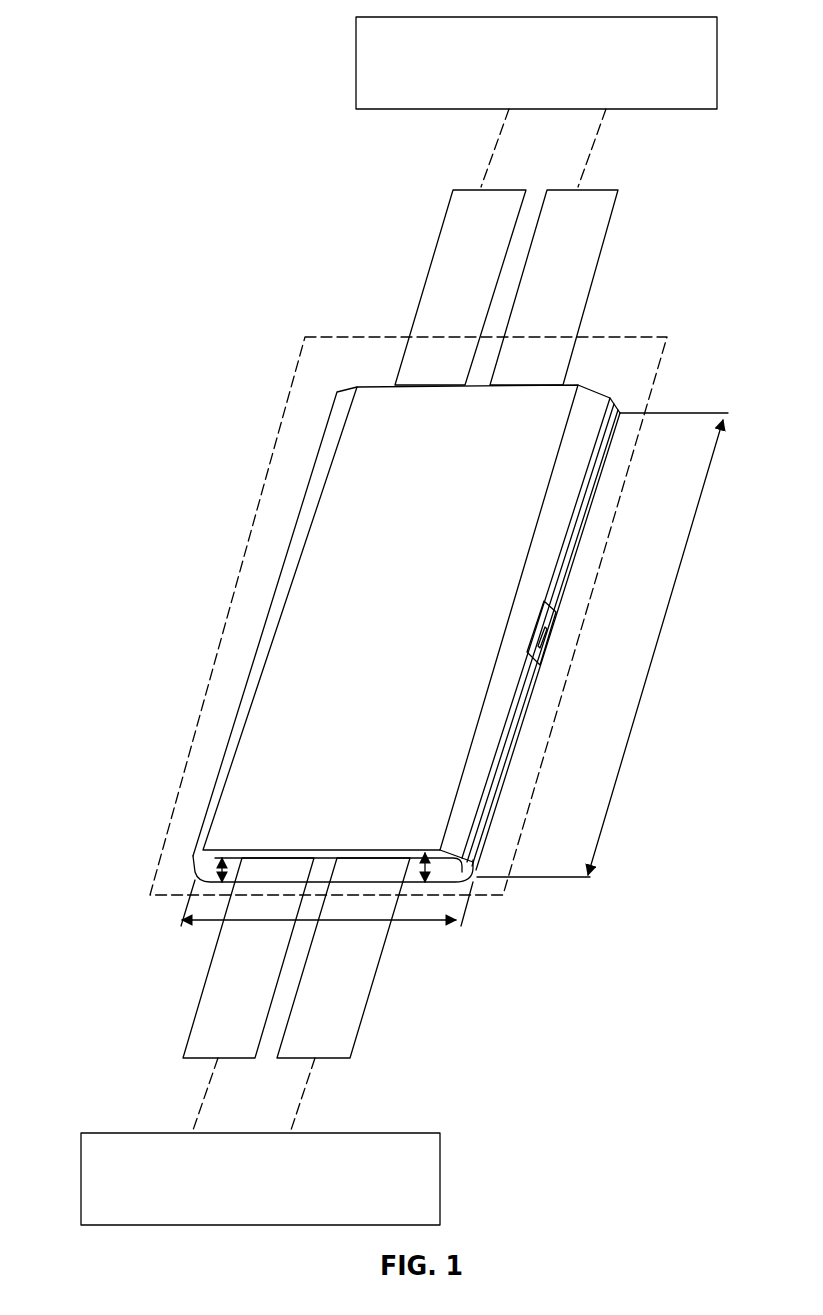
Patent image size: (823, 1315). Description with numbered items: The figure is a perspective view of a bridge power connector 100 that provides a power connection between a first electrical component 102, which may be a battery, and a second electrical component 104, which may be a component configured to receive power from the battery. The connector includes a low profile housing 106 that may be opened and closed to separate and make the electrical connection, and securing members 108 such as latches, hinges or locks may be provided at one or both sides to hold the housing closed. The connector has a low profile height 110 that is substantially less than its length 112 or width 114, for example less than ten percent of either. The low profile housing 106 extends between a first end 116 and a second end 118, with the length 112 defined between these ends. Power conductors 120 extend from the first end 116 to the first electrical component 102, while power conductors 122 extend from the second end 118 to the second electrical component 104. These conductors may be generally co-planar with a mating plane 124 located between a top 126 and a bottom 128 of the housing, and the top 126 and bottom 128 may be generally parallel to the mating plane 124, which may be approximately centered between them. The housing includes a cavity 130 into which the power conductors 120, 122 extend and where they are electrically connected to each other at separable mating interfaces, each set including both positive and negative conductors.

The bridge power connector 100 is at (197, 381).
The first electrical component 102 is at (717, 27).
The second electrical component 104 is at (440, 1178).
The low profile housing 106 is at (279, 569).
The securing members 108 is at (556, 619).
The height 110 is at (468, 862).
The length 112 is at (628, 743).
The width 114 is at (423, 922).
The first end 116 is at (592, 390).
The second end 118 is at (193, 858).
The power conductors 120 is at (435, 296).
The power conductors 122 is at (215, 1007).
The mating plane 124 is at (188, 717).
The top 126 is at (287, 687).
The bottom 128 is at (440, 895).
The cavity 130 is at (210, 884).